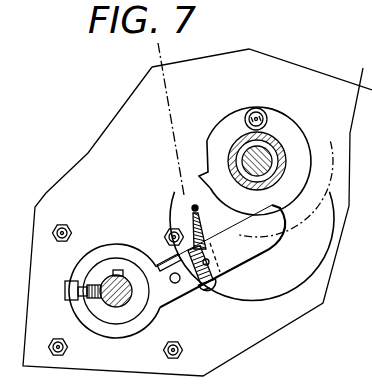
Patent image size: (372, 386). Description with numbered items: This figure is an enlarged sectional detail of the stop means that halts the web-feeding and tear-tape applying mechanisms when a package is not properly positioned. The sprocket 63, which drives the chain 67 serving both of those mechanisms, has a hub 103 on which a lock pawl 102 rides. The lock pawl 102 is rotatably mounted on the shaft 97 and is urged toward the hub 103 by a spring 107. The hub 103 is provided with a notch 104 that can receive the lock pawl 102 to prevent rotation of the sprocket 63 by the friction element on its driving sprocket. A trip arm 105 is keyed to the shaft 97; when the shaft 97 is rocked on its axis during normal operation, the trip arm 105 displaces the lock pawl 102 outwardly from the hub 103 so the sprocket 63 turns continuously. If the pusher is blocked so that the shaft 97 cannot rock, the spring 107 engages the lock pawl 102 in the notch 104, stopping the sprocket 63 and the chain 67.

The chain 67 is at (156, 61).
The sprocket 63 is at (203, 101).
The hub 103 is at (270, 108).
The notch 104 is at (199, 175).
The spring 107 is at (194, 212).
The trip arm 105 is at (163, 265).
The lock pawl 102 is at (240, 264).
The shaft 97 is at (121, 306).